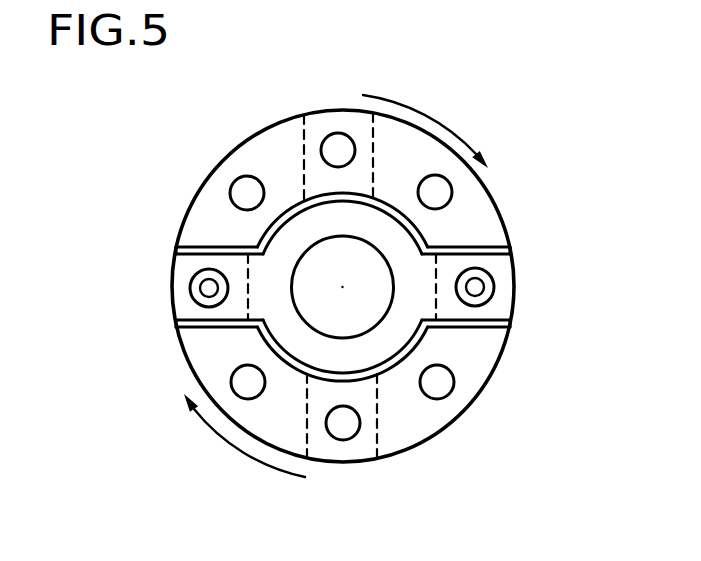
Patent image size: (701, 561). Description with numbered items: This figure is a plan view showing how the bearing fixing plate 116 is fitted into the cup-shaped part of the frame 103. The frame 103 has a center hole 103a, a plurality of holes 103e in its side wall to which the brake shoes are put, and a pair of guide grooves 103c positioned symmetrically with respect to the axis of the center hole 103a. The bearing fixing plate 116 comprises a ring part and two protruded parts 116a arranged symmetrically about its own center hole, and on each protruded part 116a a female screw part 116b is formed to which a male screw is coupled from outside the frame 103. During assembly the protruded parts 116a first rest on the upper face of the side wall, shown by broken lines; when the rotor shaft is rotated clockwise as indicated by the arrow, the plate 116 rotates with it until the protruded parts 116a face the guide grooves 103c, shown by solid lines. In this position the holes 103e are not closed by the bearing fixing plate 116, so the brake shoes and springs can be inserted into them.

The frame 103 is at (405, 432).
The center hole 103a is at (298, 203).
The guide grooves 103c is at (176, 328).
The holes 103e is at (440, 189).
The bearing fixing plate 116 is at (397, 242).
The protruded parts 116a is at (495, 264).
The female screw parts 116b is at (192, 283).